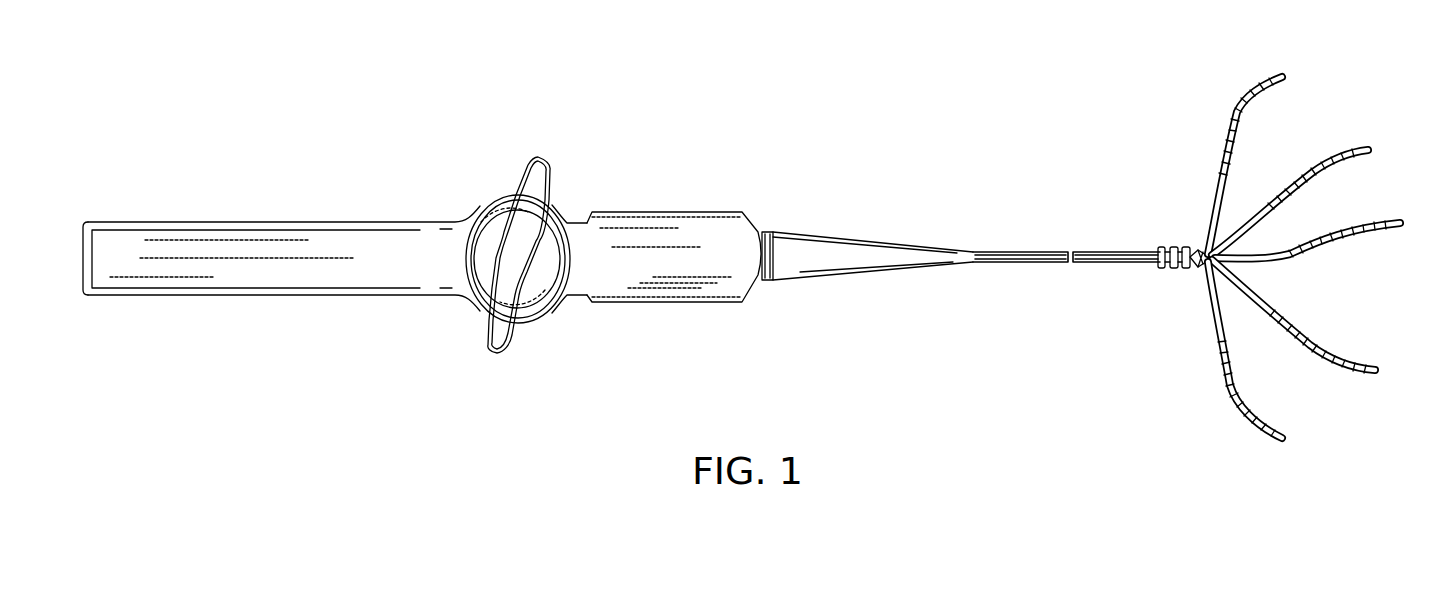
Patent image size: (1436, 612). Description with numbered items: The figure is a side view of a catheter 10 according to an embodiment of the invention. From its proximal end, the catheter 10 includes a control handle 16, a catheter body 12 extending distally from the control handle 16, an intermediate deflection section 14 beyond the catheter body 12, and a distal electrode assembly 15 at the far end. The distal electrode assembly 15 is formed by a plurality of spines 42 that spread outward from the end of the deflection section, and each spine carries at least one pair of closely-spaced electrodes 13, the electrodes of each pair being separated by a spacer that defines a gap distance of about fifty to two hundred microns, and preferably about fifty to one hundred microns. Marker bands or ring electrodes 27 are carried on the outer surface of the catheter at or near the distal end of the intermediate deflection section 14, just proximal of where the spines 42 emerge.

The catheter 10 is at (1090, 205).
The catheter body 12 is at (1015, 247).
The closely-spaced electrodes 13 is at (1226, 383).
The intermediate deflection section 14 is at (1146, 263).
The distal electrode assembly 15 is at (1341, 81).
The control handle 16 is at (268, 222).
The marker bands or ring electrodes 27 is at (1175, 246).
The spines 42 is at (1370, 151).